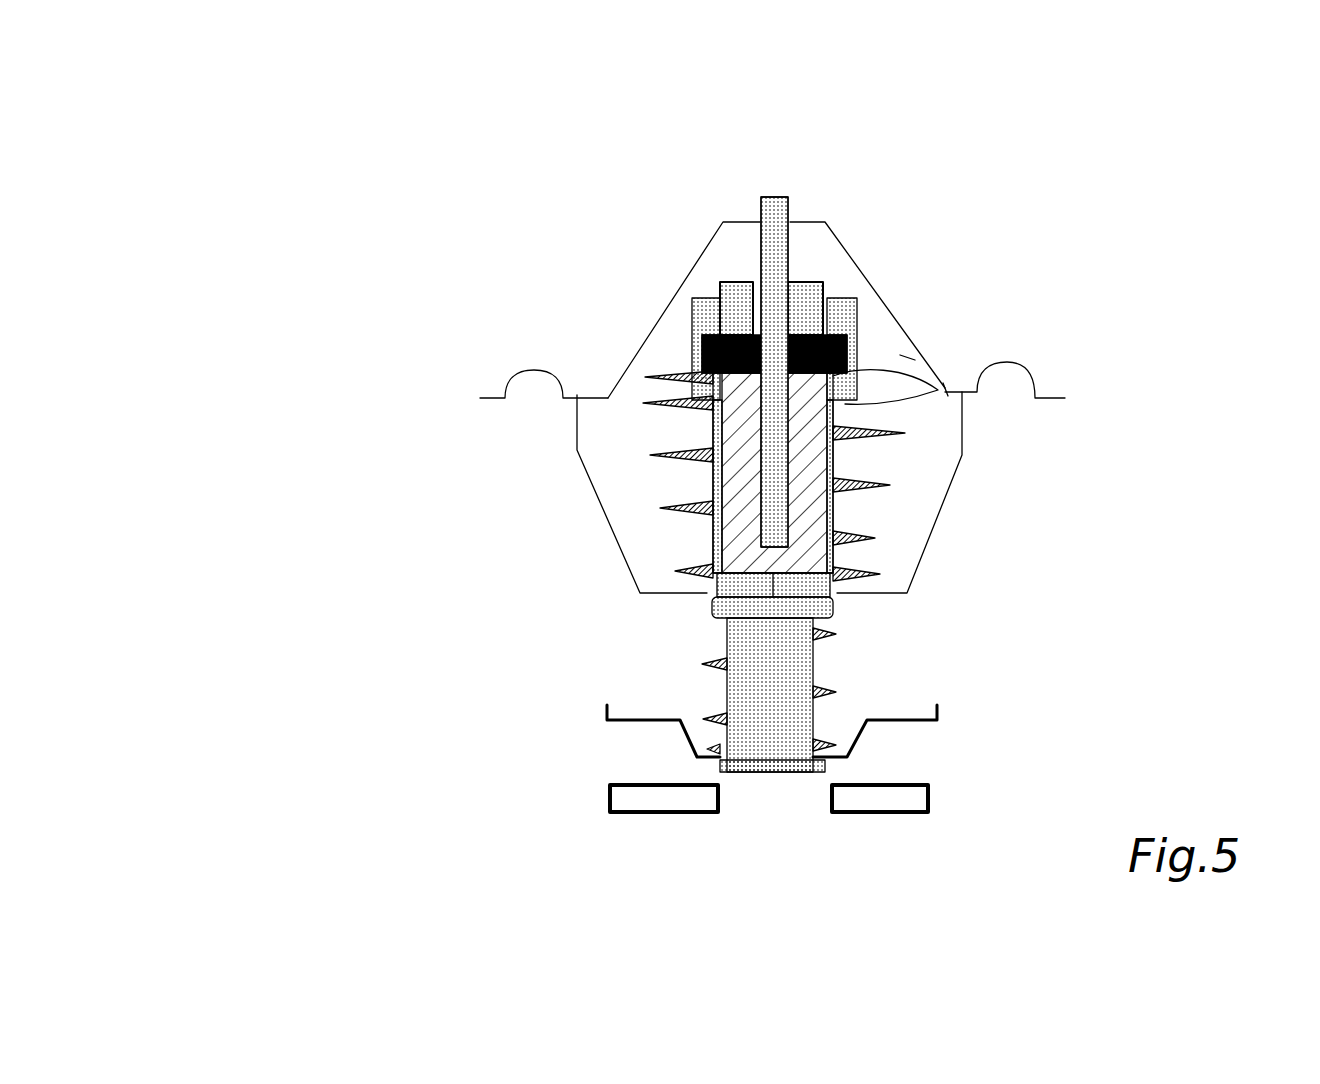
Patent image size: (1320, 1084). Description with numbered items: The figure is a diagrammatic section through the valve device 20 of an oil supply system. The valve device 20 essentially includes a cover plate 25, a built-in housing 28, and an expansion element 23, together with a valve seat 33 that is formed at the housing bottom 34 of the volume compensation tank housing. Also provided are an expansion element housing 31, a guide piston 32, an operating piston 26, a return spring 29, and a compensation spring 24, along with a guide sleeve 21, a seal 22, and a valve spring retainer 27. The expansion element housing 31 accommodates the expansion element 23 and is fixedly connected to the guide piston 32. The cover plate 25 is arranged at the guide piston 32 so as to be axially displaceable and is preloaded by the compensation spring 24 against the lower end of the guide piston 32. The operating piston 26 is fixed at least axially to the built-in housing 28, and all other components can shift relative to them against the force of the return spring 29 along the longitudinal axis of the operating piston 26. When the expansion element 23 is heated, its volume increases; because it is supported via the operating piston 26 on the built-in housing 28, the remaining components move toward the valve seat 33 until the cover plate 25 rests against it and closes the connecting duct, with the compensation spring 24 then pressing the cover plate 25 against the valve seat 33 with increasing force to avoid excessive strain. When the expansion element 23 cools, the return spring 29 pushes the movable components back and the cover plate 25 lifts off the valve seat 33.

The valve device 20 is at (1193, 172).
The guide sleeve 21 is at (740, 280).
The seal 22 is at (692, 348).
The expansion element 23 is at (713, 481).
The compensation spring 24 is at (720, 719).
The cover plate 25 is at (680, 743).
The operating piston 26 is at (802, 306).
The valve spring retainer 27 is at (945, 390).
The built-in housing 28 is at (852, 250).
The return spring 29 is at (683, 448).
The expansion element housing 31 is at (717, 594).
The guide piston 32 is at (762, 686).
The valve seat 33 is at (847, 800).
The housing bottom 34 is at (640, 805).